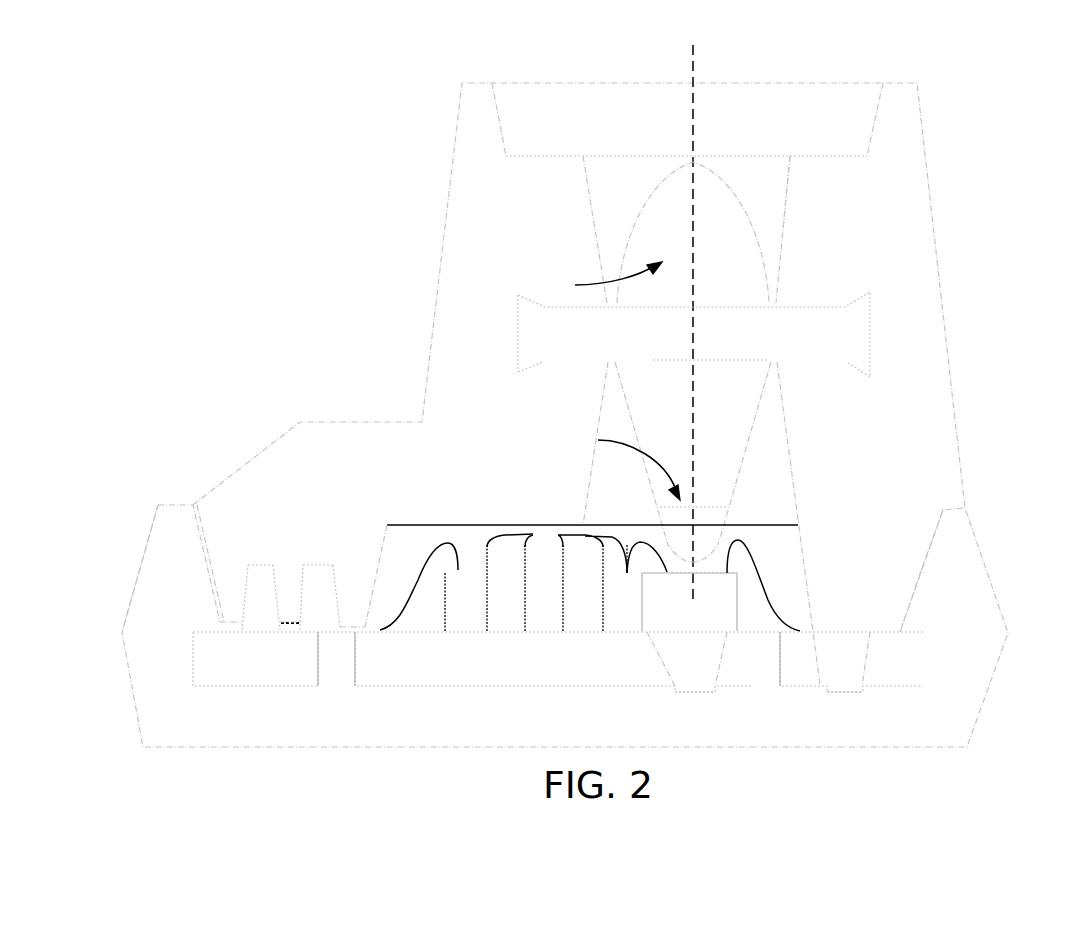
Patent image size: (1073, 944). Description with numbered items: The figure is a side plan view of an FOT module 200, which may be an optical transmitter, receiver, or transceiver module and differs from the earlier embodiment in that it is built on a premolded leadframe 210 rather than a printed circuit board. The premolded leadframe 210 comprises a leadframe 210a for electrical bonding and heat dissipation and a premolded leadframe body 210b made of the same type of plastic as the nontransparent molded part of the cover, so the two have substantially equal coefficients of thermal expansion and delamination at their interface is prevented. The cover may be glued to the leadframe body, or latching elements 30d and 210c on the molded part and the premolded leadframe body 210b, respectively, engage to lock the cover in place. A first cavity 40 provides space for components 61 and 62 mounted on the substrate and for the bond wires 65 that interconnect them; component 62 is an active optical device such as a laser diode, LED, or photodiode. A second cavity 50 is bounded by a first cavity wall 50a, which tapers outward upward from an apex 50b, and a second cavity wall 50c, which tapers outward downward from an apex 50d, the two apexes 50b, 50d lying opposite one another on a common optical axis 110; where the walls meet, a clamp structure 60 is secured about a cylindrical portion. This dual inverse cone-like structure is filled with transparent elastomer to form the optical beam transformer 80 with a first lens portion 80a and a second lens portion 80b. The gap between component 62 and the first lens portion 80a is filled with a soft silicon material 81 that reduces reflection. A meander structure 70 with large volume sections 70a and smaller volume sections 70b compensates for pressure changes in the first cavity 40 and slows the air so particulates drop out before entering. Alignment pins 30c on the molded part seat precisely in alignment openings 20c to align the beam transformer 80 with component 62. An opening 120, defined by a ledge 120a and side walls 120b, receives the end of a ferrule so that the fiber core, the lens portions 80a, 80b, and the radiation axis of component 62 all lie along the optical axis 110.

The FOT module 200 is at (206, 185).
The optical axis 110 is at (694, 120).
The opening 120 is at (698, 127).
The ledge 120a is at (553, 158).
The side walls 120b is at (499, 128).
The second cavity 50 is at (784, 420).
The first cavity wall 50a is at (749, 451).
The apex 50b is at (694, 556).
The second cavity wall 50c is at (763, 271).
The apex 50d is at (694, 163).
The clamp structure 60 is at (852, 330).
The optical beam transformer 80 is at (678, 388).
The first lens portion 80a is at (616, 464).
The second lens portion 80b is at (597, 279).
The first cavity 40 is at (406, 538).
The component 61 is at (540, 615).
The component 62 is at (697, 617).
The bond wires 65 is at (770, 561).
The soft silicon material 81 is at (677, 562).
The meander structure 70 is at (252, 600).
The large volume sections 70a is at (318, 565).
The smaller volume sections 70b is at (232, 630).
The premolded leadframe 210 is at (558, 638).
The leadframe 210a is at (233, 683).
The premolded leadframe body 210b is at (160, 637).
The latching element 210c is at (932, 567).
The latching element 30d is at (933, 555).
The alignment pins 30c is at (697, 690).
The alignment openings 20c is at (707, 680).